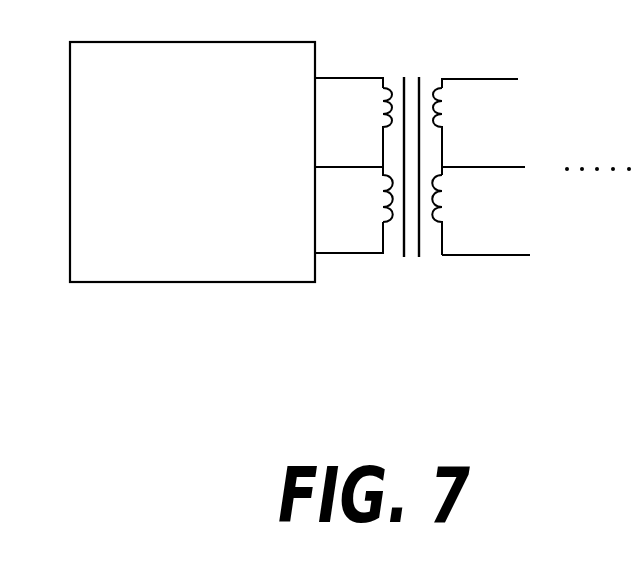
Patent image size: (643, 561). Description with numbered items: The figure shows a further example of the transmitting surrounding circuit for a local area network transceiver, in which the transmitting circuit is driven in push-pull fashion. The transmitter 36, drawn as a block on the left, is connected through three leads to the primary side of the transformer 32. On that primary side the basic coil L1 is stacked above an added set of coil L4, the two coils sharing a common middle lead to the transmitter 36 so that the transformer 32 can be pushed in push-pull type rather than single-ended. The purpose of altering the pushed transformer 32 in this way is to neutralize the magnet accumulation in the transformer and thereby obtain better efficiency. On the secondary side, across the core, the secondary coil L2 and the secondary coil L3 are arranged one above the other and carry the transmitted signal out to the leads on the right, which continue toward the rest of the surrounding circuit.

The transmitter 36 is at (192, 146).
The transformer 32 is at (422, 139).
The basic coil L1 is at (372, 127).
The coil L4 is at (373, 196).
The secondary coil L2 is at (455, 131).
The secondary coil L3 is at (454, 215).